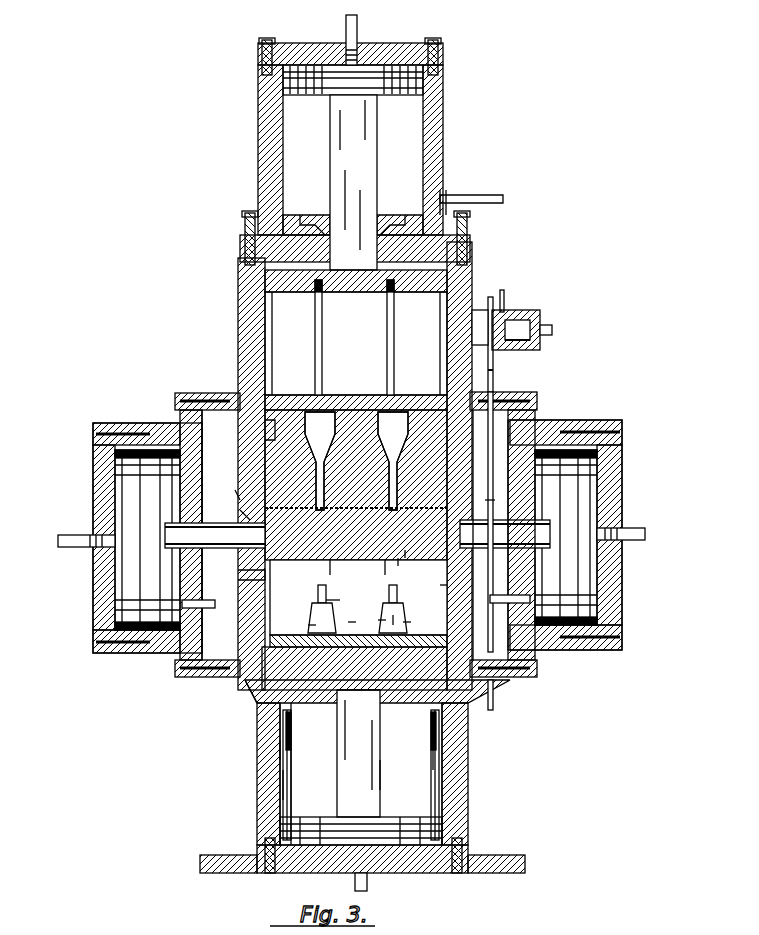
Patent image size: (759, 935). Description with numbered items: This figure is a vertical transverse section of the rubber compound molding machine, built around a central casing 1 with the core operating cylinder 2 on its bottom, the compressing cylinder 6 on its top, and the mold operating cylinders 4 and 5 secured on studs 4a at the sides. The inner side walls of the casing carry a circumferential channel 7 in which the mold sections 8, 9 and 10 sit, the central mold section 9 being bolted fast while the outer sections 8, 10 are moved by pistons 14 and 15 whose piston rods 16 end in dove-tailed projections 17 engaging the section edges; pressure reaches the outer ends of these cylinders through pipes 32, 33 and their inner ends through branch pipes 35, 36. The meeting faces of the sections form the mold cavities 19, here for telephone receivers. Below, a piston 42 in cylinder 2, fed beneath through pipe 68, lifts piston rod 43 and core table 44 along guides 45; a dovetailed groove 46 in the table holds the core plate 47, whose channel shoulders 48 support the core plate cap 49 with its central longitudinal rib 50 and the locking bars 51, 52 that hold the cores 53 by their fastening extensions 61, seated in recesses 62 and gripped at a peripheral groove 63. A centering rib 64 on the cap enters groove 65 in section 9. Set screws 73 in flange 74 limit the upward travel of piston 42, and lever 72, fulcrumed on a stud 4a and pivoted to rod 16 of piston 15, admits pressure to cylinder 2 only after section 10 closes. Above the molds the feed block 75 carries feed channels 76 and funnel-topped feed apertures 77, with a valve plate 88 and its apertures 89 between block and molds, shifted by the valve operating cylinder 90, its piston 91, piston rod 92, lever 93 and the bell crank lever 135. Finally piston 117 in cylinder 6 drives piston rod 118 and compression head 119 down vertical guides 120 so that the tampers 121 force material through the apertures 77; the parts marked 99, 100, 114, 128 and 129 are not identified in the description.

The casing 1 is at (238, 336).
The core operating cylinder 2 is at (460, 806).
The mold operating cylinder 4 is at (140, 425).
The studs 4a is at (225, 393).
The mold operating cylinder 5 is at (580, 420).
The compressing cylinder 6 is at (258, 165).
The circumferential channel 7 is at (245, 560).
The mold section 8 is at (245, 575).
The central mold section 9 is at (330, 560).
The mold section 10 is at (235, 490).
The piston 14 is at (120, 478).
The piston 15 is at (560, 478).
The piston rods 16 is at (160, 565).
The dove-tailed projections 17 is at (240, 510).
The mold cavities 19 is at (390, 558).
The pipe 32 is at (75, 548).
The pipe 33 is at (645, 534).
The branch pipe 35 is at (205, 608).
The branch pipe 36 is at (510, 603).
The piston 42 is at (430, 825).
The piston rod 43 is at (385, 770).
The core table 44 is at (258, 705).
The guides 45 is at (318, 600).
The dovetailed groove 46 is at (312, 625).
The core plate 47 is at (291, 760).
The shoulders 48 is at (431, 725).
The core plate cap 49 is at (393, 618).
The central longitudinal rib 50 is at (345, 690).
The locking bar 51 is at (350, 625).
The locking bar 52 is at (380, 730).
The cores 53 is at (328, 600).
The fastening extensions 61 is at (408, 622).
The recesses 62 is at (431, 745).
The peripheral groove 63 is at (292, 722).
The centering rib 64 is at (380, 625).
The groove 65 is at (400, 562).
The pipe 68 is at (352, 882).
The lever 72 is at (493, 700).
The set screws 73 is at (437, 740).
The flange 74 is at (280, 740).
The feed block 75 is at (265, 420).
The feed channels 76 is at (310, 400).
The feed apertures 77 is at (350, 400).
The valve plate 88 is at (490, 500).
The apertures 89 is at (405, 556).
The valve operating cylinder 90 is at (515, 312).
The piston 91 is at (540, 320).
The piston rod 92 is at (505, 350).
The lever 93 is at (495, 375).
The rod 99 is at (502, 290).
The stem 100 is at (552, 332).
The cylinder wall 114 is at (360, 745).
The piston 117 is at (425, 88).
The piston rod 118 is at (378, 150).
The compression head 119 is at (470, 252).
The vertical guides 120 is at (262, 306).
The tampers 121 is at (388, 320).
The shaft 128 is at (358, 38).
The lever 129 is at (485, 197).
The bell crank lever 135 is at (488, 298).